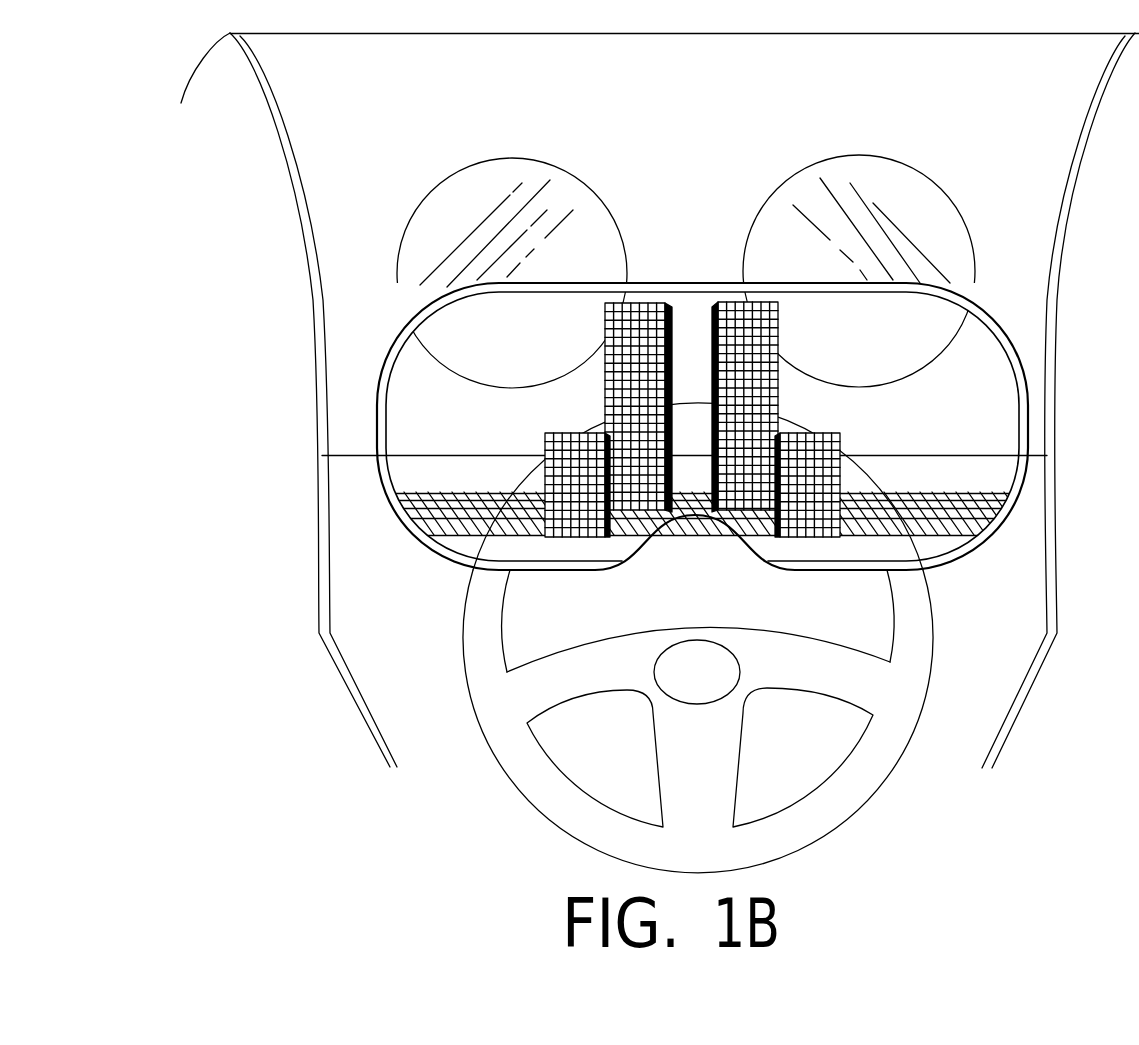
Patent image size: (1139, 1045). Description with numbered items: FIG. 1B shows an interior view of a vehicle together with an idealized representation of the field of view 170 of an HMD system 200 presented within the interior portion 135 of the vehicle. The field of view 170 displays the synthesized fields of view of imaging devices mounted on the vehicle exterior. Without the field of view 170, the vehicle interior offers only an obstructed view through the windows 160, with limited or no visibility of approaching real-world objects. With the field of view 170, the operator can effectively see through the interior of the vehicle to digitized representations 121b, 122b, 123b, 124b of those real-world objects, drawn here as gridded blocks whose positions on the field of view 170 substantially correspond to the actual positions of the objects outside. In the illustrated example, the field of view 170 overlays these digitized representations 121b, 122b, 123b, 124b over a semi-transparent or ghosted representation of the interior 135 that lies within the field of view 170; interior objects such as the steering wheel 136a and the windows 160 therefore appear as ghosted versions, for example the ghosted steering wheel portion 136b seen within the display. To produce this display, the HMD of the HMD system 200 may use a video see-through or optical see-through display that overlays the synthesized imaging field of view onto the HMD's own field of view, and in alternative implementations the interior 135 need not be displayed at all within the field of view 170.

The interior portion 135 is at (197, 178).
The steering wheel 136a is at (912, 612).
The ghosted steering wheel portion 136b is at (858, 470).
The windows 160 is at (858, 170).
The field of view 170 is at (397, 390).
The HMD system 200 is at (377, 425).
The digitized representation 121b is at (838, 440).
The digitized representation 122b is at (548, 445).
The digitized representation 123b is at (625, 372).
The digitized representation 124b is at (755, 372).